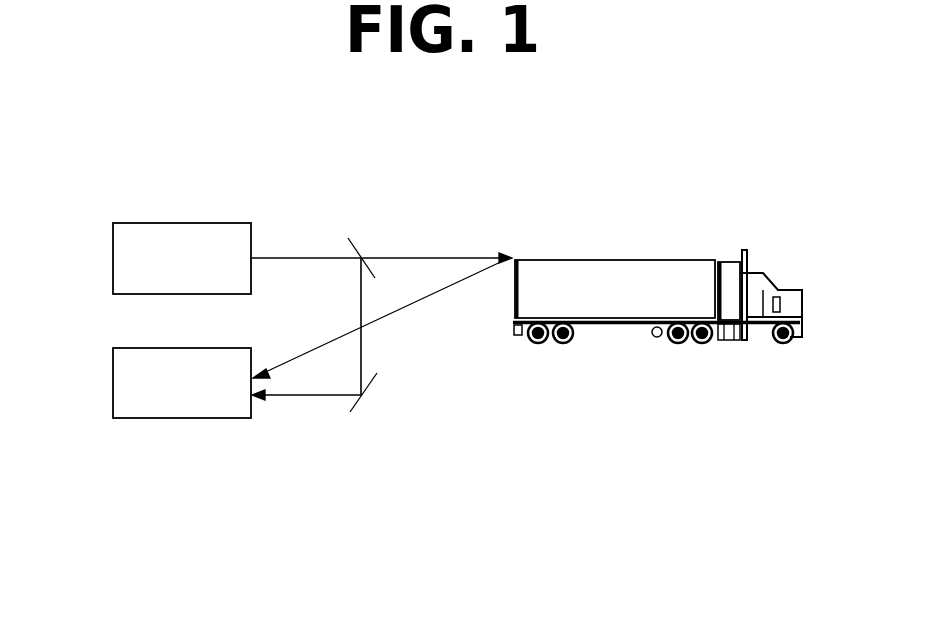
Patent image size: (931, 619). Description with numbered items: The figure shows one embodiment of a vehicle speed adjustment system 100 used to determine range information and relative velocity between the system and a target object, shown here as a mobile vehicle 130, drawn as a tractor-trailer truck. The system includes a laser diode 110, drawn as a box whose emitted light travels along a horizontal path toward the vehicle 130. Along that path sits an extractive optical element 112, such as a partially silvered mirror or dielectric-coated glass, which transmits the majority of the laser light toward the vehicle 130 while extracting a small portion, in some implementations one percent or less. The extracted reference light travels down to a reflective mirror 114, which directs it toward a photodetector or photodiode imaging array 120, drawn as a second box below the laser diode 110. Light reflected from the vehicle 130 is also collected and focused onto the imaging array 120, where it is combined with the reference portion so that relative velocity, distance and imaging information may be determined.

The vehicle speed adjustment system 100 is at (118, 105).
The laser diode 110 is at (167, 223).
The photodiode imaging array 120 is at (167, 348).
The extractive optical element 112 is at (357, 242).
The reflective mirror 114 is at (360, 400).
The mobile vehicle 130 is at (627, 258).